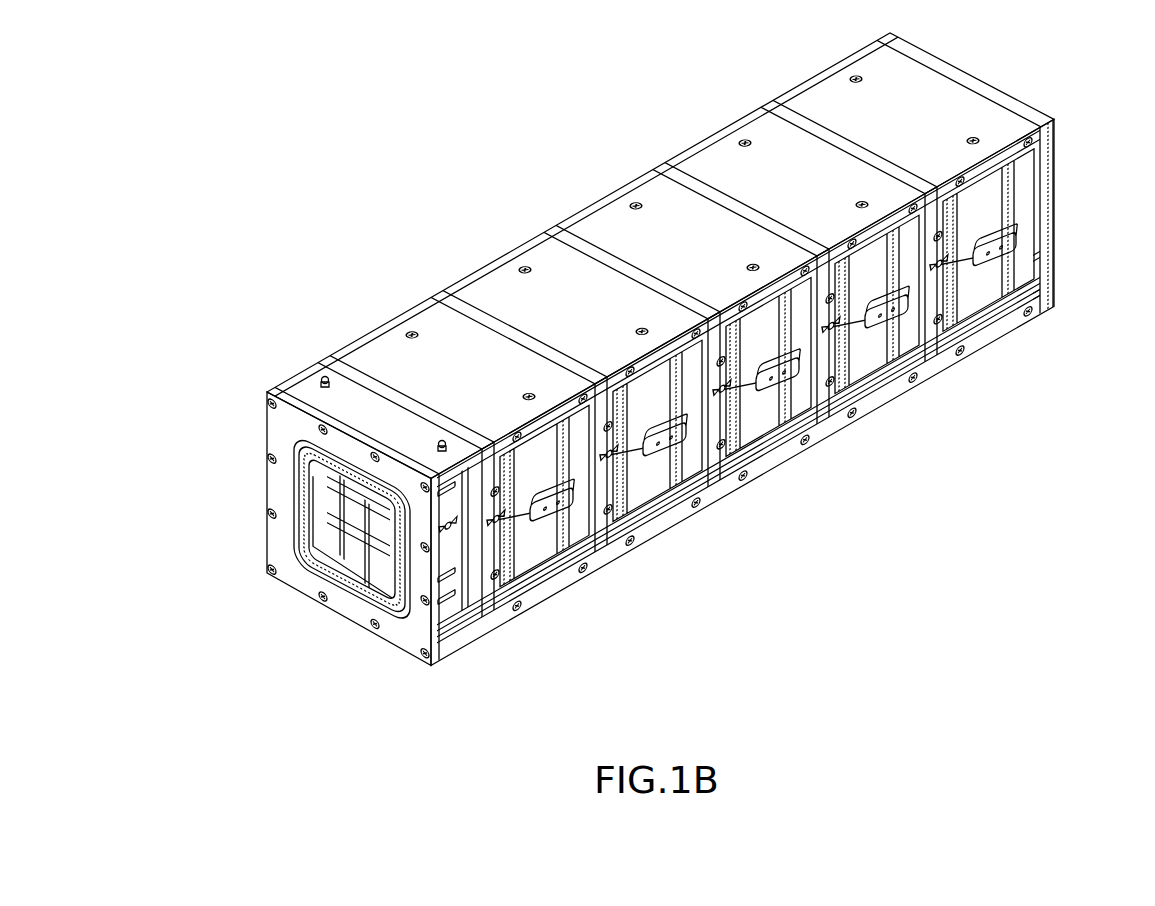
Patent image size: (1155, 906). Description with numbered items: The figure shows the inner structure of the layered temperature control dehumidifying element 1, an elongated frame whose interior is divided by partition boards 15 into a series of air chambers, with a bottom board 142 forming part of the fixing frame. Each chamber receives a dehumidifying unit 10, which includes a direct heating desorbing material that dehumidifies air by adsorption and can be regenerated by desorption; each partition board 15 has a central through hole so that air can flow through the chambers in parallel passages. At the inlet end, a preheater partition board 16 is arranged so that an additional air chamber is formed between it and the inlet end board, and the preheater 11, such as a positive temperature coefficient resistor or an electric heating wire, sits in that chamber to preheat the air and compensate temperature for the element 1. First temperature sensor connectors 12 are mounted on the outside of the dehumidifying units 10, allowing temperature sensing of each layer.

The layered temperature control dehumidifying element 1 is at (300, 115).
The dehumidifying unit 10 is at (536, 538).
The preheater 11 is at (455, 598).
The first temperature sensor connector 12 is at (1020, 235).
The bottom board 142 is at (980, 335).
The partition board 15 is at (587, 245).
The preheater partition board 16 is at (345, 362).